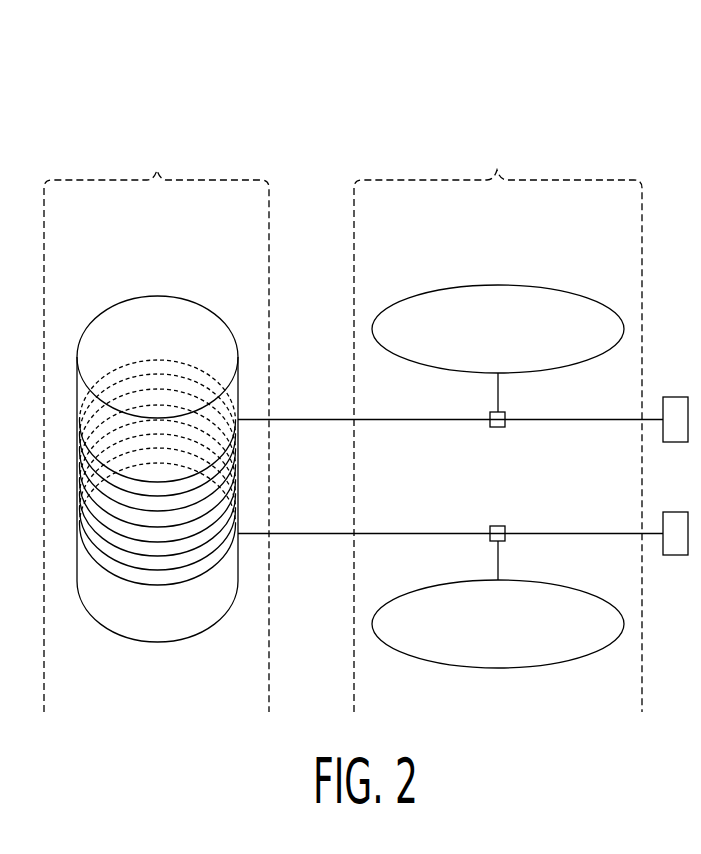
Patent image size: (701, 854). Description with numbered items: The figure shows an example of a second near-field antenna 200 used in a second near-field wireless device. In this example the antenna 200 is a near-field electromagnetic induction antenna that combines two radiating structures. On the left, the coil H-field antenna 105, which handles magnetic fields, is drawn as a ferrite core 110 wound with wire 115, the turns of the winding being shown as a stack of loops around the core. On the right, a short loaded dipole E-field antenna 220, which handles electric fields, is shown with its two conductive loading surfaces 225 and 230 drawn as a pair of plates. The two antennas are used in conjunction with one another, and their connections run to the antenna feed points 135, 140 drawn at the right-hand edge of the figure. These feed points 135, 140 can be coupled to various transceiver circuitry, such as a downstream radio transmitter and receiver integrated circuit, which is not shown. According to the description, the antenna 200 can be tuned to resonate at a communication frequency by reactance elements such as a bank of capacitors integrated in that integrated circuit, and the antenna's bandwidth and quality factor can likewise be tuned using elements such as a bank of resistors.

The second near-field antenna 200 is at (88, 131).
The coil (H-field) antenna 105 is at (156, 423).
The ferrite core 110 is at (203, 302).
The wire 115 is at (138, 642).
The short loaded dipole (E-field) antenna 220 is at (498, 423).
The conductive loading surface 225 is at (590, 297).
The conductive loading surface 230 is at (578, 665).
The feed point 135 is at (677, 397).
The feed point 140 is at (672, 555).